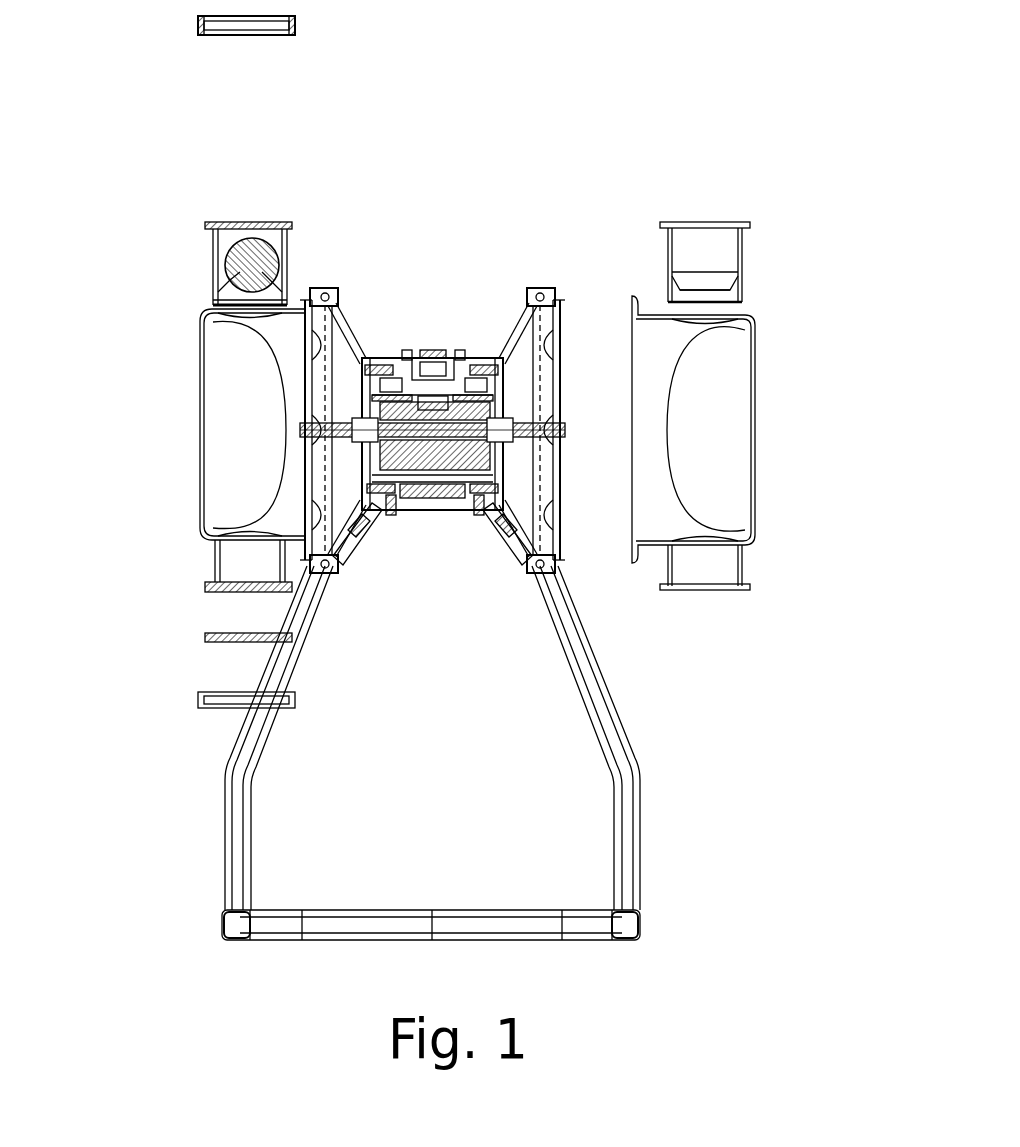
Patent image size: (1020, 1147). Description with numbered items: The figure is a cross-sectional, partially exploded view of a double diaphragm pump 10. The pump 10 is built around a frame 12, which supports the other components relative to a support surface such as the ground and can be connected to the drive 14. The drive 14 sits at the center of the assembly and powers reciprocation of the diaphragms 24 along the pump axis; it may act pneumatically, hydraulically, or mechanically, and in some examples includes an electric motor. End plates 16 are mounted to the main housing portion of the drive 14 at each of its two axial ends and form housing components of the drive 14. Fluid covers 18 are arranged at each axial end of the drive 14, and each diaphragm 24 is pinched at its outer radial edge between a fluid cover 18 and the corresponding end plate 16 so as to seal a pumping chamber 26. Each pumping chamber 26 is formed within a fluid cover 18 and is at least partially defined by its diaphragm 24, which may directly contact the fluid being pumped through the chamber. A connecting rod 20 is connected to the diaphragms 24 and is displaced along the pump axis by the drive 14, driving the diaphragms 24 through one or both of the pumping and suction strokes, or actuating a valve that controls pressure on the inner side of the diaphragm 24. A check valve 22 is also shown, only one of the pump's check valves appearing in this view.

The pump 10 is at (797, 152).
The frame 12 is at (597, 692).
The drive 14 is at (469, 360).
The end plates 16 is at (370, 520).
The fluid covers 18 is at (755, 375).
The connecting rod 20 is at (453, 437).
The check valve 22 is at (281, 259).
The diaphragms 24 is at (306, 335).
The pumping chamber 26 is at (224, 396).